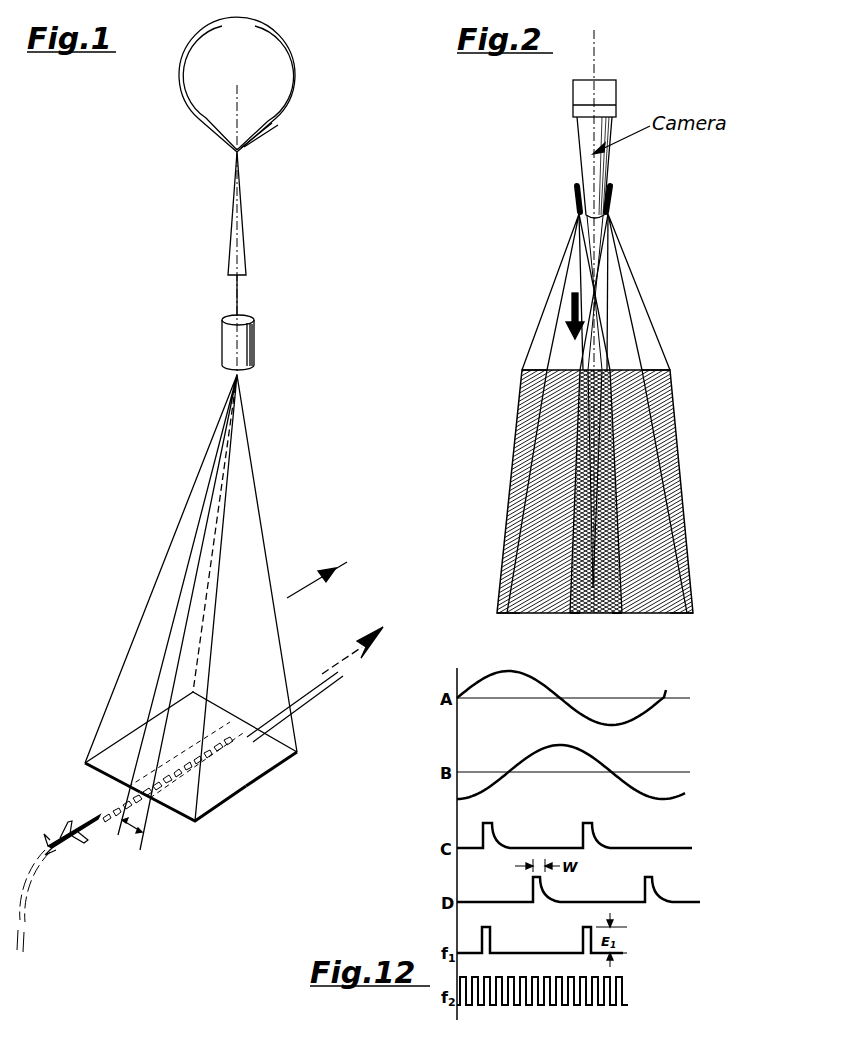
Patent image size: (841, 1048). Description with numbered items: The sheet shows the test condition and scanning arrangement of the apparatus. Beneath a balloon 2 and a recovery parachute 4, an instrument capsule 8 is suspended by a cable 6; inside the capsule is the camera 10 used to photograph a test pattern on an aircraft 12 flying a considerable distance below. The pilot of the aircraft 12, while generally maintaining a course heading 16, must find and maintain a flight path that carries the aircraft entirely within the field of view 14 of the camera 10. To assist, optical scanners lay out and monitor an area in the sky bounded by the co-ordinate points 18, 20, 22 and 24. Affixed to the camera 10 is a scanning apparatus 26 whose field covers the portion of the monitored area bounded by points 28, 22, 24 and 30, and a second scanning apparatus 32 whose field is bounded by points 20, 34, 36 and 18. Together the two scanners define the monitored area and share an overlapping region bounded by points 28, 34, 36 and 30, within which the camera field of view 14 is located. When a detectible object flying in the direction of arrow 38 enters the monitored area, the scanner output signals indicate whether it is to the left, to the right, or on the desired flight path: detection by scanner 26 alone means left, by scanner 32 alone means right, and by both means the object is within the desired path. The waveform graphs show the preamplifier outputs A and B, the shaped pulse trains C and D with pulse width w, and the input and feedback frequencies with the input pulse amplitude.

In FIG. 1, the balloon 2 is at (181, 79).
In FIG. 1, the recovery parachute 4 is at (233, 254).
In FIG. 1, the cable 6 is at (239, 293).
In FIG. 1, the instrument capsule 8 is at (224, 344).
In FIG. 2, the camera 10 is at (582, 148).
In FIG. 1, the aircraft 12 is at (80, 839).
In FIG. 1, the field of view 14 is at (246, 741).
In FIG. 2, the field of view 14 is at (586, 613).
In FIG. 1, the compass heading 16 is at (313, 578).
In FIG. 1, the co-ordinate point 18 is at (195, 692).
In FIG. 2, the co-ordinate point 18 is at (694, 613).
In FIG. 1, the co-ordinate point 20 is at (85, 762).
In FIG. 2, the co-ordinate point 20 is at (671, 371).
In FIG. 1, the co-ordinate point 22 is at (196, 823).
In FIG. 2, the co-ordinate point 22 is at (521, 371).
In FIG. 1, the co-ordinate point 24 is at (299, 753).
In FIG. 2, the co-ordinate point 24 is at (498, 613).
In FIG. 2, the scanning apparatus 26 is at (575, 190).
In FIG. 2, the co-ordinate point 28 is at (617, 370).
In FIG. 2, the co-ordinate point 30 is at (621, 614).
In FIG. 2, the second scanning apparatus 32 is at (612, 199).
In FIG. 2, the co-ordinate point 34 is at (583, 371).
In FIG. 2, the co-ordinate point 36 is at (567, 613).
In FIG. 1, the arrow 38 is at (372, 636).
In FIG. 2, the arrow 38 is at (568, 316).